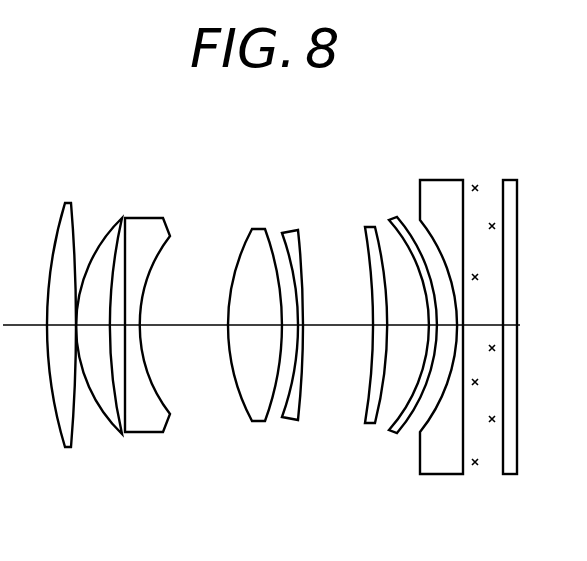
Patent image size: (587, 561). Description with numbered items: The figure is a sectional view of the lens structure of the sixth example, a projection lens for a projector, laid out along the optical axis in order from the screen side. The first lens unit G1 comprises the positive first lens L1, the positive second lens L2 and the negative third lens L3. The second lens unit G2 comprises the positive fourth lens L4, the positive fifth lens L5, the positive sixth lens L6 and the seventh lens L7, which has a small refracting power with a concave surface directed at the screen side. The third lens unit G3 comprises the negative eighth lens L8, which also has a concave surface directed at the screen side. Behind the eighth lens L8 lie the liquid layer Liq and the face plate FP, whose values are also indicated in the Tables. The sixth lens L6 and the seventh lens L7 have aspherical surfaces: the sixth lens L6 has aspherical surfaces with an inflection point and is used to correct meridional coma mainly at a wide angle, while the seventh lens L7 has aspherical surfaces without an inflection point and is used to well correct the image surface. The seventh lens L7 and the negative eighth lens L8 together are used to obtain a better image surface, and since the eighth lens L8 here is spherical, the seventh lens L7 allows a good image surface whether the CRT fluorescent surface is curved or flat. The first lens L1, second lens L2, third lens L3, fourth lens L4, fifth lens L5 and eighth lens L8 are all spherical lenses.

The first lens L1 is at (61, 303).
The second lens L2 is at (99, 296).
The third lens L3 is at (147, 295).
The fourth lens L4 is at (255, 290).
The fifth lens L5 is at (294, 289).
The sixth lens L6 is at (367, 291).
The seventh lens L7 is at (410, 296).
The eighth lens L8 is at (439, 301).
The liquid layer Liq is at (479, 304).
The face plate FP is at (515, 300).
The first lens unit G1 is at (111, 331).
The second lens unit G2 is at (332, 331).
The third lens unit G3 is at (473, 327).